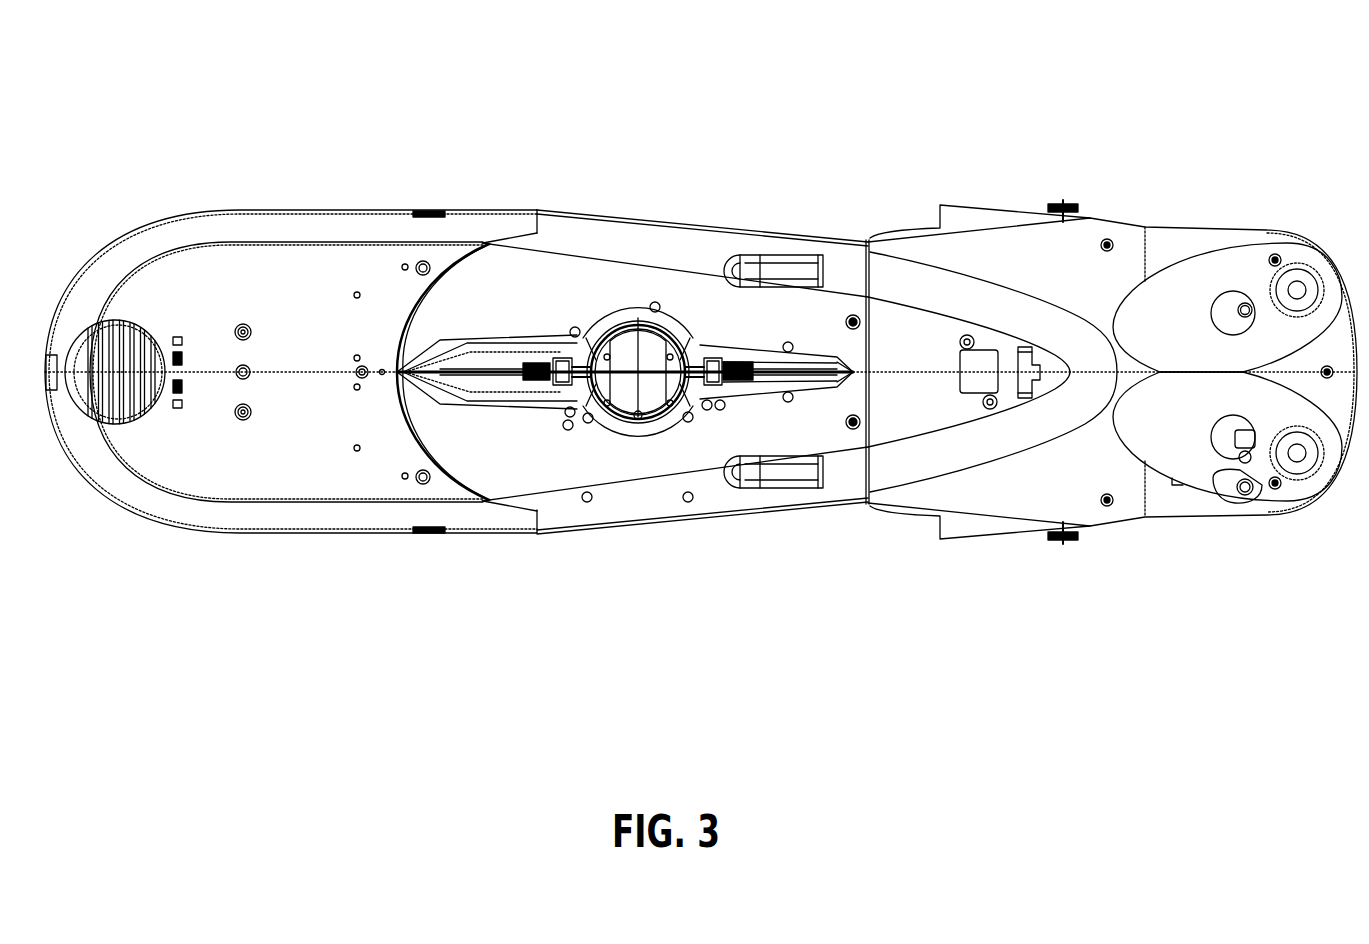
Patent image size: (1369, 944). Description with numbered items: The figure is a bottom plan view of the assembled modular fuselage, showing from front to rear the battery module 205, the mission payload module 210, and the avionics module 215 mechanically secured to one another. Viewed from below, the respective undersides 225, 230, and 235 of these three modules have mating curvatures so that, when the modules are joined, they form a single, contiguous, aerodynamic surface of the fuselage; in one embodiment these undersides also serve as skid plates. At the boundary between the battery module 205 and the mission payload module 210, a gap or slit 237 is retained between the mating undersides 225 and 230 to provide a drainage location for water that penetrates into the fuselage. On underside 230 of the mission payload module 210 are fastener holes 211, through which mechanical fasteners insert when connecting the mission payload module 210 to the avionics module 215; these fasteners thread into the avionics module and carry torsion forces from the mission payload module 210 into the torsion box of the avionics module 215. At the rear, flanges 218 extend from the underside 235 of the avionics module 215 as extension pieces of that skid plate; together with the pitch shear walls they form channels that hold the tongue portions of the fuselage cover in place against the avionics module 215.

The battery module 205 is at (149, 109).
The mission payload module 210 is at (700, 111).
The avionics module 215 is at (1239, 101).
The underside 225 is at (318, 418).
The underside 230 is at (546, 308).
The underside 235 is at (936, 418).
The gap or slit 237 is at (473, 247).
The fastener holes 211 is at (853, 315).
The flanges 218 is at (943, 210).